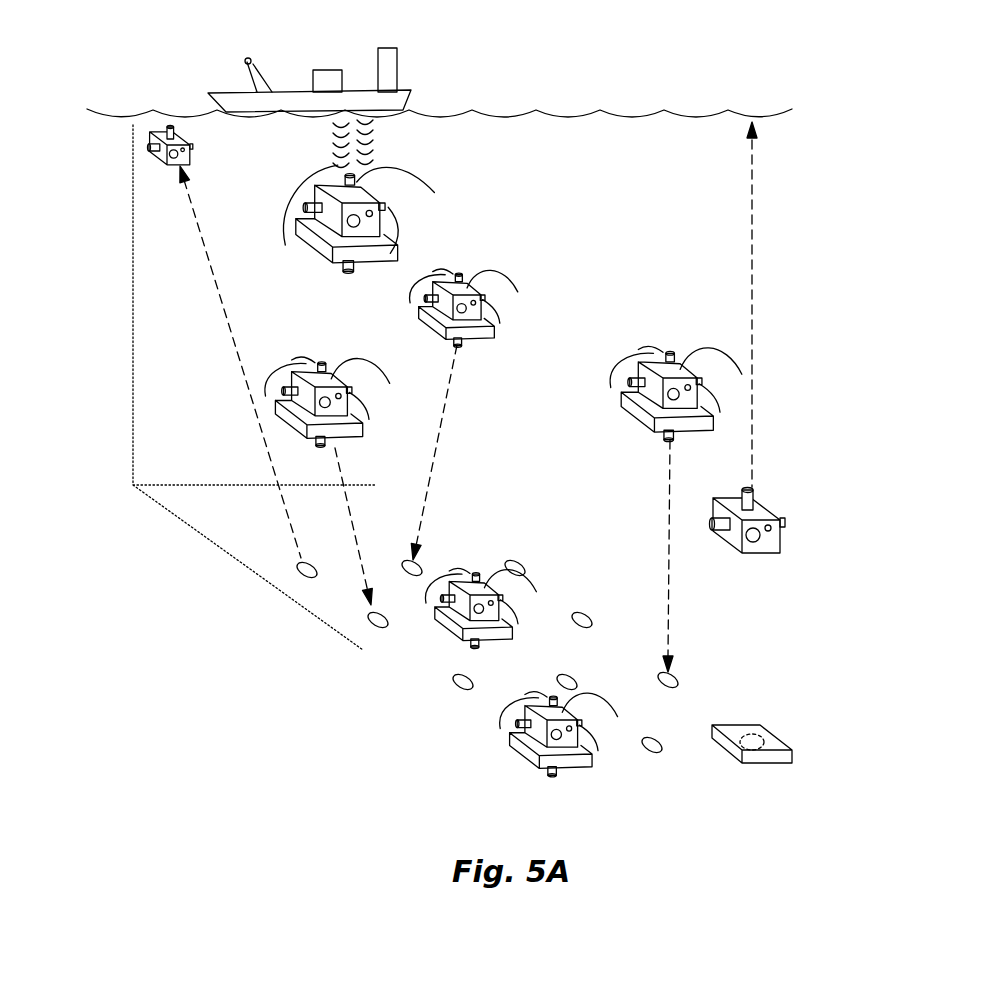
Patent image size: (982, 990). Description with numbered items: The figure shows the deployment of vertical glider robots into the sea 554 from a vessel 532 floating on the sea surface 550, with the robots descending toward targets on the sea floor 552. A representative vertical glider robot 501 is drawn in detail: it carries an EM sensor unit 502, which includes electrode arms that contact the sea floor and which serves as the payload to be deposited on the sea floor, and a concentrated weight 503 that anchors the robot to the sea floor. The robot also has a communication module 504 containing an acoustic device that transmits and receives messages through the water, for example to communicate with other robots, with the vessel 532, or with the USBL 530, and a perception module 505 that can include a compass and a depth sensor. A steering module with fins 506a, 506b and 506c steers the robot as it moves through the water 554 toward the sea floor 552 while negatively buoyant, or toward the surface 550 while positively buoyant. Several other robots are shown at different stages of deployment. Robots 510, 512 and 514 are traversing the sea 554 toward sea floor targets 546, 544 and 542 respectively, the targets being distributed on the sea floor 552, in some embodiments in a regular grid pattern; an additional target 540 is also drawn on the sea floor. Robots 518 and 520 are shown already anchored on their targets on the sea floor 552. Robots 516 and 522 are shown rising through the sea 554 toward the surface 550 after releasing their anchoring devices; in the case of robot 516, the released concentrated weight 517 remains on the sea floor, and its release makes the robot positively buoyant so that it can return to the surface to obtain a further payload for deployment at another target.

The vertical glider robot 501 is at (368, 242).
The EM sensor unit 502 is at (344, 205).
The concentrated weight 503 is at (347, 241).
The communication module 504 is at (369, 213).
The perception module 505 is at (353, 221).
The fin 506a is at (311, 205).
The fin 506b is at (348, 267).
The fin 506c is at (396, 210).
The vertical glider robot 510 is at (646, 412).
The vertical glider robot 512 is at (433, 323).
The vertical glider robot 514 is at (298, 422).
The vertical glider robot 516 is at (772, 545).
The concentrated weight 517 is at (757, 755).
The vertical glider robot 518 is at (532, 757).
The vertical glider robot 520 is at (463, 637).
The vertical glider robot 522 is at (166, 158).
The USBL 530 is at (336, 78).
The vessel 532 is at (279, 98).
The target landing position 540 is at (298, 567).
The sea floor target 542 is at (366, 620).
The sea floor target 544 is at (428, 565).
The sea floor target 546 is at (678, 682).
The sea surface 550 is at (487, 112).
The sea floor 552 is at (250, 523).
The sea 554 is at (638, 291).